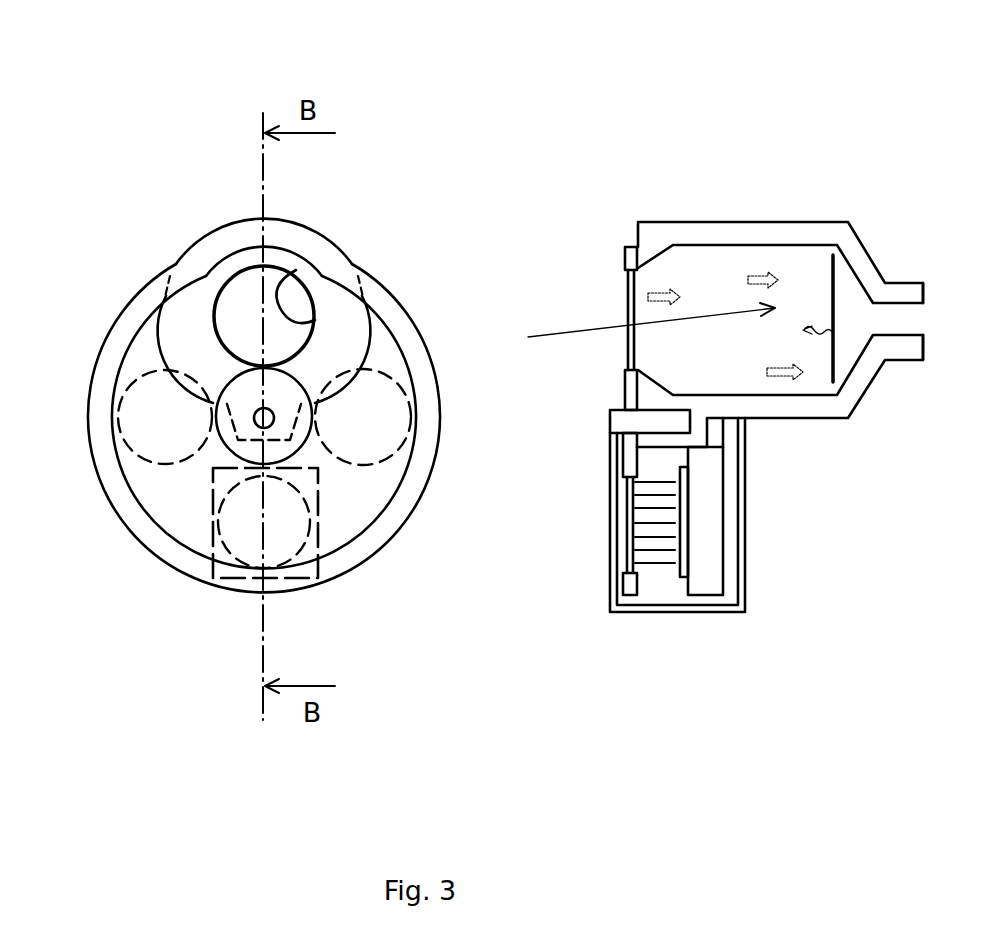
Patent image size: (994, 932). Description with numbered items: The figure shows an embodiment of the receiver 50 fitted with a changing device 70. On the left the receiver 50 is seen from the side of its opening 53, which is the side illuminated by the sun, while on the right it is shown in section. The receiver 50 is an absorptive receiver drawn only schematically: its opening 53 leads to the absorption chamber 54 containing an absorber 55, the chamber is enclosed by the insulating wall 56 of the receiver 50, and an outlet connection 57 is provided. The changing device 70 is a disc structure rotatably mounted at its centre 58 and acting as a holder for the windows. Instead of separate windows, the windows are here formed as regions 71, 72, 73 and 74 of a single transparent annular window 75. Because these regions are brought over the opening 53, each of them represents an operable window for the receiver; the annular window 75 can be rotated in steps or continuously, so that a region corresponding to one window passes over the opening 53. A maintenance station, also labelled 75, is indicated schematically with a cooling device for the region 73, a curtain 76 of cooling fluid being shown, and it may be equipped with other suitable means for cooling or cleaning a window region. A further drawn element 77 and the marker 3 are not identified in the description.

The receiver 50 is at (198, 217).
The opening 53 is at (214, 339).
The absorption chamber 54 is at (735, 298).
The absorber 55 is at (833, 346).
The insulating wall 56 is at (312, 229).
The outlet connection 57 is at (907, 290).
The centre 58 is at (610, 420).
The changing device 70 is at (75, 735).
The region of the annular window 71 is at (296, 270).
The region of the annular window 72 is at (158, 460).
The region of the annular window 73 is at (225, 548).
The region of the annular window 74 is at (386, 382).
The transparent annular window 75 is at (192, 502).
The curtain of cooling fluid 76 is at (612, 645).
The heater 77 is at (658, 523).
The flow direction 3 is at (572, 332).